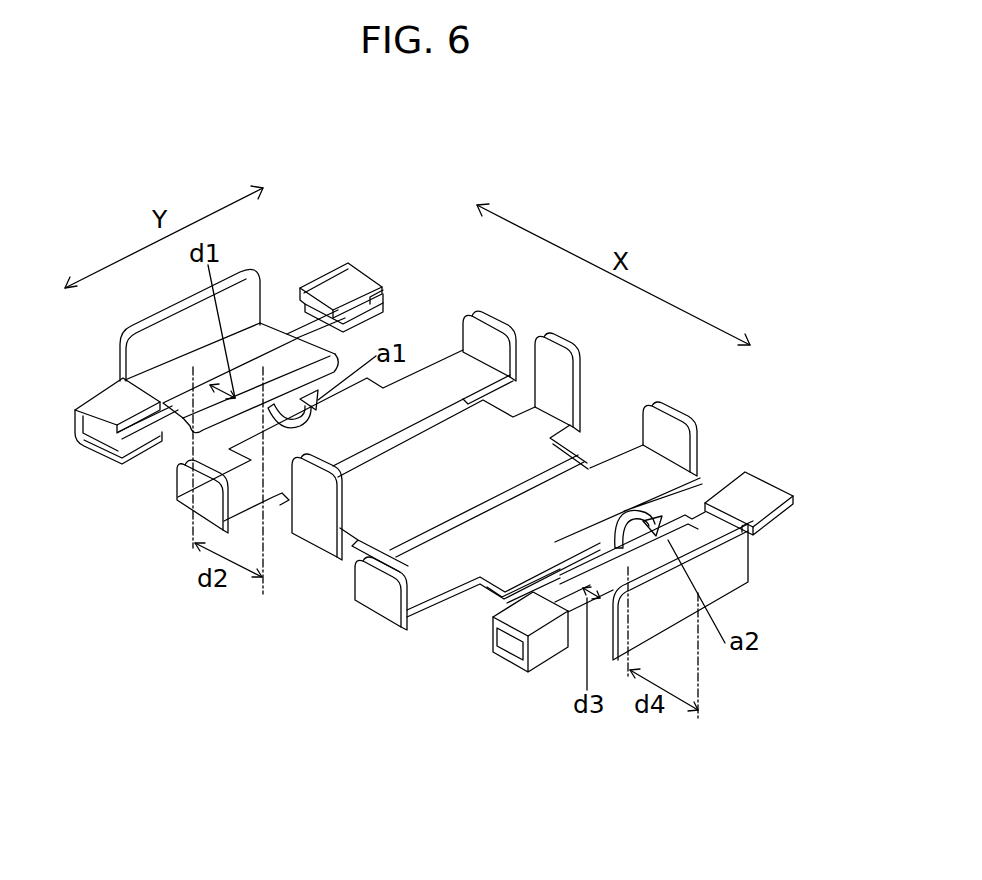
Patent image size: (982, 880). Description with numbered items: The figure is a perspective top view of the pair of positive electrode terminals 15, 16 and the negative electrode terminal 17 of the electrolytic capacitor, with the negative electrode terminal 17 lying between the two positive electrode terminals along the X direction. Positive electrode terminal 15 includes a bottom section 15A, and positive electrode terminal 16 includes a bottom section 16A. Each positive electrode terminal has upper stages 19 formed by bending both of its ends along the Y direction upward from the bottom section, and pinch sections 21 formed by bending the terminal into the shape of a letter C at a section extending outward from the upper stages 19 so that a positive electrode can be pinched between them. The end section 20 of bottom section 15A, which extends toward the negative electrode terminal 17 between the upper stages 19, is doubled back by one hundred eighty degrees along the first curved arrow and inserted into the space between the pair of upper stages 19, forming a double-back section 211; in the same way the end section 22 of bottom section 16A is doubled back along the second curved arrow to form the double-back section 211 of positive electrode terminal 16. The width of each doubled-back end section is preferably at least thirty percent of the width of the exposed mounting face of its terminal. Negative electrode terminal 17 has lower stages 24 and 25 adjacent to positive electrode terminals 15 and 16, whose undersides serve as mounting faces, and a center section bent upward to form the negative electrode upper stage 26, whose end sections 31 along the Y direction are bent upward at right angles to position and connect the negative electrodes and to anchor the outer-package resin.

The positive electrode terminal 15 is at (110, 335).
The bottom section 15A is at (250, 340).
The positive electrode terminal 16 is at (757, 565).
The bottom section 16A is at (607, 637).
The negative electrode terminal 17 is at (587, 408).
The positive electrode terminal upper stage 19 is at (105, 438).
The end section 20 is at (267, 352).
The pinch section 21 is at (112, 398).
The end section 22 is at (580, 600).
The lower stage 24 is at (437, 385).
The lower stage 25 is at (585, 477).
The negative electrode upper stage 26 is at (352, 525).
The end section 31 is at (555, 355).
The double-back section 211 is at (183, 404).